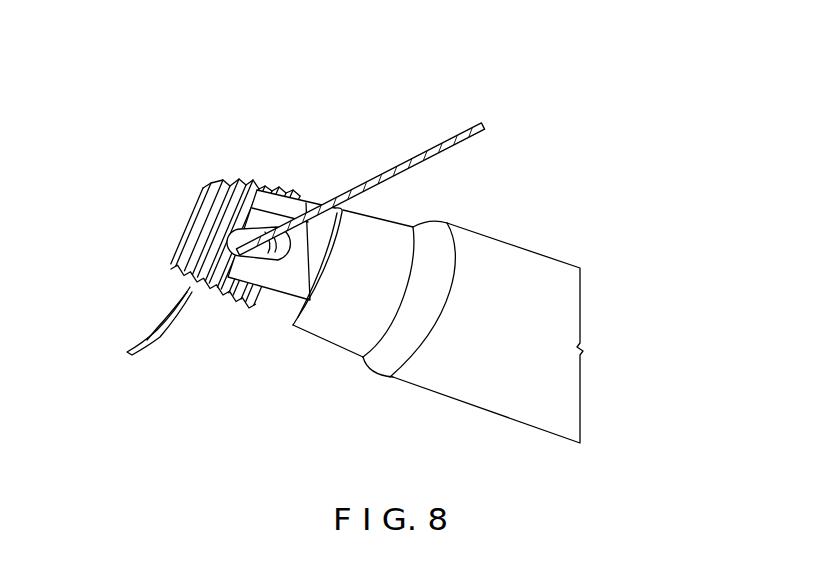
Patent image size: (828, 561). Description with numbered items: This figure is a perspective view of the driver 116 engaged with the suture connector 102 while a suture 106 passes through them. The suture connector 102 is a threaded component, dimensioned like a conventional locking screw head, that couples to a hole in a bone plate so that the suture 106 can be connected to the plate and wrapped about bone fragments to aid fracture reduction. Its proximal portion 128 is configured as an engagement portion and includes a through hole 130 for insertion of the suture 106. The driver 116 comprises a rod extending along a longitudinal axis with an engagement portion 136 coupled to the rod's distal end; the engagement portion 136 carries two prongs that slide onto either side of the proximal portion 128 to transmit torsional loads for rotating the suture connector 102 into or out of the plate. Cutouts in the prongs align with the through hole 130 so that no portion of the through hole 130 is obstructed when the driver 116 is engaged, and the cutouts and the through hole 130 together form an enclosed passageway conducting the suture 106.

The suture connector 102 is at (250, 180).
The suture 106 is at (408, 157).
The driver 116 is at (560, 295).
The proximal portion 128 is at (182, 268).
The through hole 130 is at (232, 239).
The engagement portion 136 is at (257, 274).